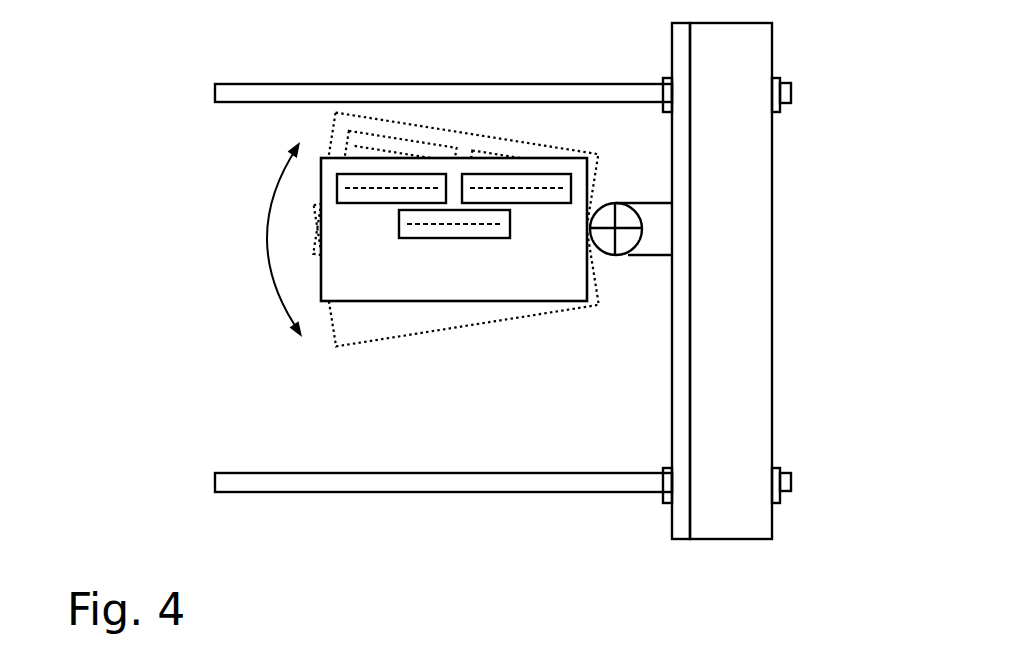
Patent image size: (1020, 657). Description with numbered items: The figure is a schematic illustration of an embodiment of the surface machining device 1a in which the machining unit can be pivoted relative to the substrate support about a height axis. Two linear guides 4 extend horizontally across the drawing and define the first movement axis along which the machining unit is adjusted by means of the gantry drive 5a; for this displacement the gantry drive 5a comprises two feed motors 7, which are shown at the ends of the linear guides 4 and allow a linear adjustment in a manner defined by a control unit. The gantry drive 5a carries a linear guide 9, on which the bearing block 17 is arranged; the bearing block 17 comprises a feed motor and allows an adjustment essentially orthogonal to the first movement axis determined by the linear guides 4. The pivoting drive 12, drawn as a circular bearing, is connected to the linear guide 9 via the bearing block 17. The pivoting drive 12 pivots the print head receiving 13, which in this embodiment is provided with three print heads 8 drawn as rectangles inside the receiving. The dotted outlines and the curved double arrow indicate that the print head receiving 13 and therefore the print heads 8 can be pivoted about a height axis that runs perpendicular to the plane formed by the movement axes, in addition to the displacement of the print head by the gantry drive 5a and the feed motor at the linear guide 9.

The surface machining device 1a is at (176, 190).
The linear guides 4 is at (360, 92).
The feed motors 7 is at (662, 78).
The linear guide 9 is at (682, 148).
The gantry drive 5a is at (723, 247).
The print head receiving 13 is at (538, 265).
The print head 8 is at (437, 232).
The bearing block 17 is at (653, 222).
The pivoting drive 12 is at (624, 242).